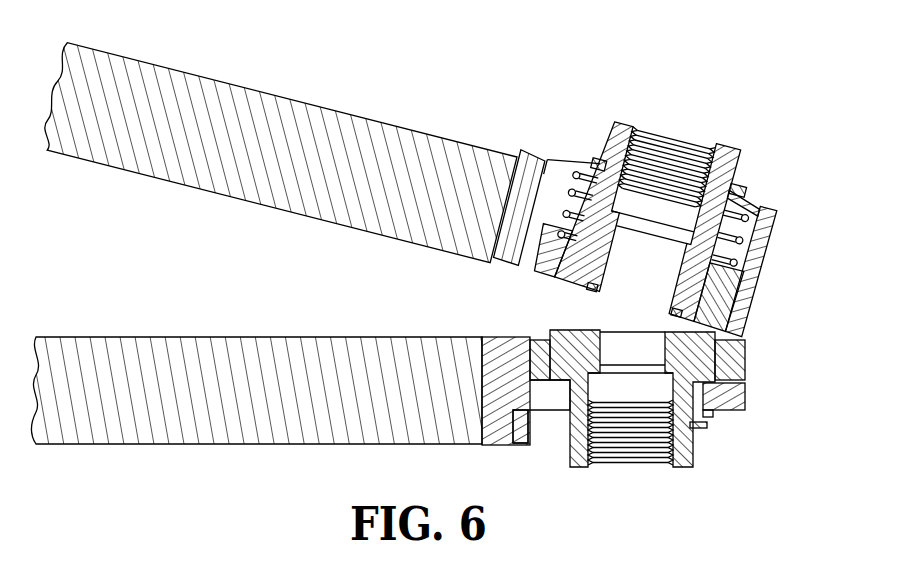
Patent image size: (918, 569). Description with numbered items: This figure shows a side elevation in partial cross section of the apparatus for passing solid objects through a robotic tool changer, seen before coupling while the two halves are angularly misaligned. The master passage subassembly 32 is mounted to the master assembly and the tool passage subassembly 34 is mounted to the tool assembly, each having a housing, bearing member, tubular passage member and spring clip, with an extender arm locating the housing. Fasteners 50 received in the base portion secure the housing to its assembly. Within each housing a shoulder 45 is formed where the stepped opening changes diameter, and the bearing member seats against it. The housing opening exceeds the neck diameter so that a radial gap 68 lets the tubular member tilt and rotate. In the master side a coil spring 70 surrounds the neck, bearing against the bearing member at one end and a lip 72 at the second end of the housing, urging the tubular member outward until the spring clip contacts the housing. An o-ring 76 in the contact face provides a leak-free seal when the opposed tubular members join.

The master passage subassembly 32 is at (461, 77).
The tool passage subassembly 34 is at (232, 457).
The shoulder 45 is at (742, 277).
The fasteners 50 is at (528, 427).
The radial gap 68 is at (705, 416).
The coil spring 70 is at (768, 247).
The lip 72 is at (573, 172).
The o-ring 76 is at (590, 295).